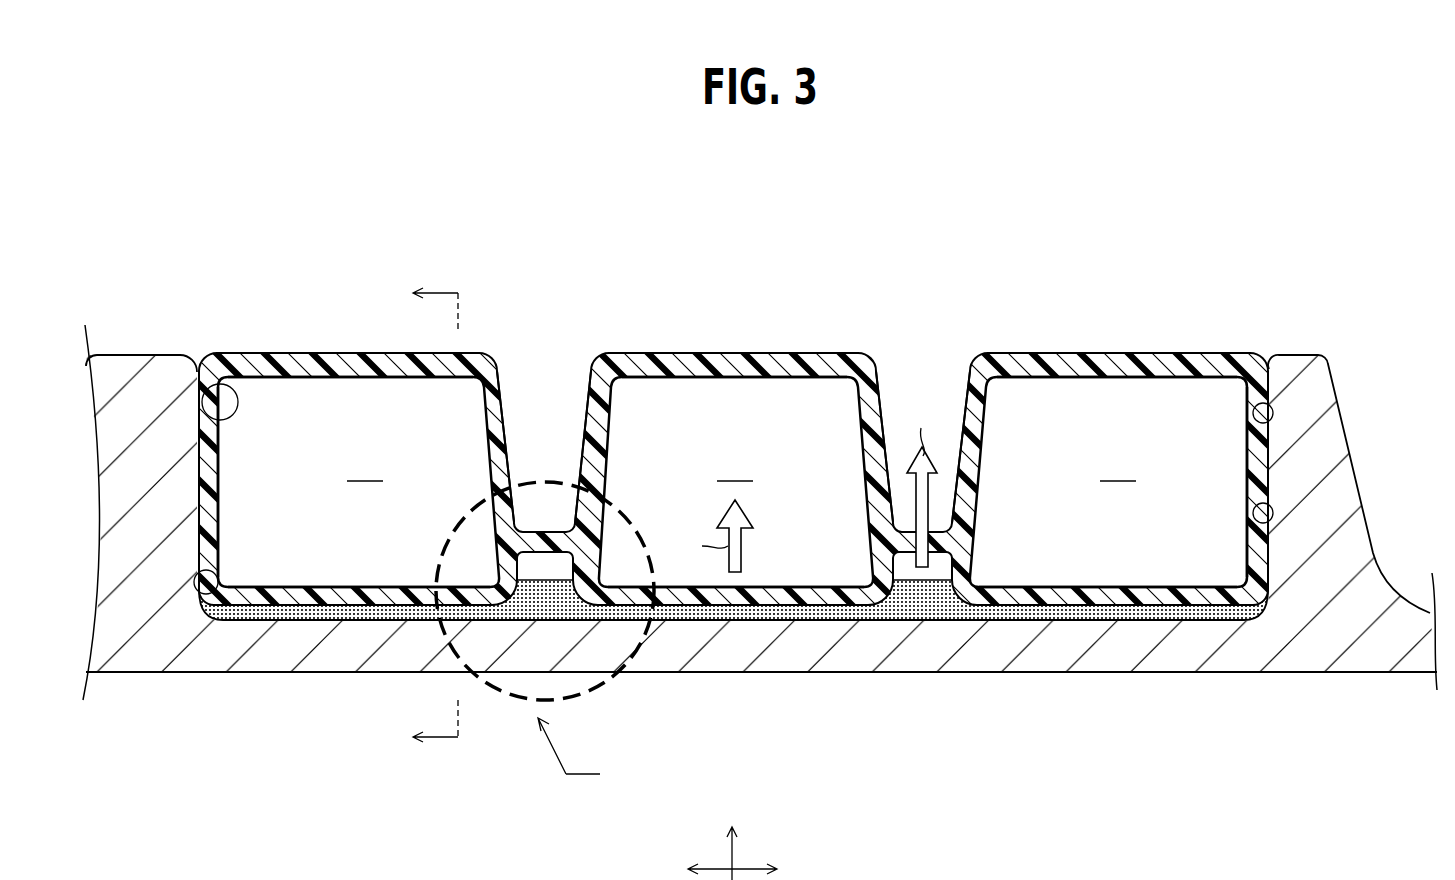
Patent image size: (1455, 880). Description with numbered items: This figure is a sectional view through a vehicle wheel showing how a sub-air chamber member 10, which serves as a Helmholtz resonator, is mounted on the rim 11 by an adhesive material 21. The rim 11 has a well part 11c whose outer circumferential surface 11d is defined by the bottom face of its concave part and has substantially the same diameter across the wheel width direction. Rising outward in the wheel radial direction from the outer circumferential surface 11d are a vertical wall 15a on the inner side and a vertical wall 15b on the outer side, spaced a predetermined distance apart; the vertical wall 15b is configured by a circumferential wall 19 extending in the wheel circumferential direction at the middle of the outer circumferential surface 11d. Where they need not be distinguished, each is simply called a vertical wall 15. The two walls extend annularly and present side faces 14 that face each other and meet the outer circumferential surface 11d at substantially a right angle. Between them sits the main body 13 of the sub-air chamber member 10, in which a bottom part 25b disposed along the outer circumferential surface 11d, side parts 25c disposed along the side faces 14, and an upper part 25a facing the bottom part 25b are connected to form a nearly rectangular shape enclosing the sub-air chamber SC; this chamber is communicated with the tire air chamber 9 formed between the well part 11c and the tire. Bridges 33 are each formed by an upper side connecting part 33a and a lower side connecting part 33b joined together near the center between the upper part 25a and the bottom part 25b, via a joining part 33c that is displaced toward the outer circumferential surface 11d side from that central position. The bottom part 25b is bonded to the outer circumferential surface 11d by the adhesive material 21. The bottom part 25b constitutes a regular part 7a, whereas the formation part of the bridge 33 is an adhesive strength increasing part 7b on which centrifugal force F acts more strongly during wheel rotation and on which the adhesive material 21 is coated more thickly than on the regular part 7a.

The tire air chamber 9 is at (768, 204).
The sub-air chamber member 10 is at (816, 404).
The main body 13 is at (743, 322).
The rim 11 is at (118, 368).
The well part 11c is at (633, 654).
The outer circumferential surface 11d is at (575, 612).
The side faces 14 is at (207, 620).
The vertical wall 15 is at (816, 404).
The vertical wall 15a is at (212, 388).
The vertical wall 15b is at (1272, 410).
The circumferential wall 19 is at (1343, 477).
The adhesive material 21 is at (942, 600).
The upper part 25a is at (313, 372).
The bottom part 25b is at (357, 594).
The side parts 25c is at (214, 545).
The bridge 33 is at (672, 256).
The upper side connecting part 33a is at (505, 545).
The lower side connecting part 33b is at (488, 456).
The joining part 33c is at (560, 540).
The regular part 7a is at (803, 625).
The adhesive strength increasing part 7b is at (913, 613).